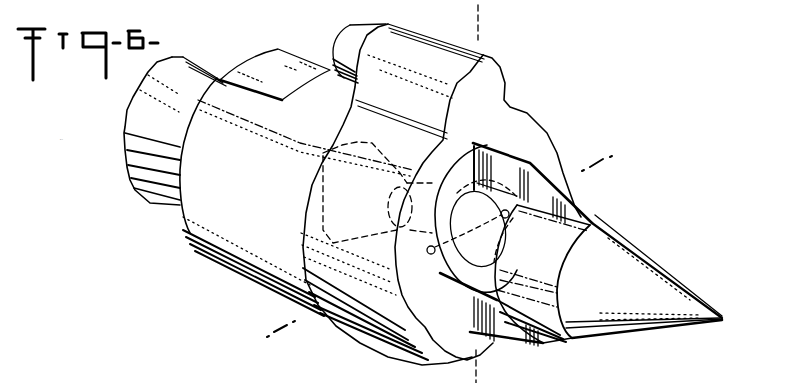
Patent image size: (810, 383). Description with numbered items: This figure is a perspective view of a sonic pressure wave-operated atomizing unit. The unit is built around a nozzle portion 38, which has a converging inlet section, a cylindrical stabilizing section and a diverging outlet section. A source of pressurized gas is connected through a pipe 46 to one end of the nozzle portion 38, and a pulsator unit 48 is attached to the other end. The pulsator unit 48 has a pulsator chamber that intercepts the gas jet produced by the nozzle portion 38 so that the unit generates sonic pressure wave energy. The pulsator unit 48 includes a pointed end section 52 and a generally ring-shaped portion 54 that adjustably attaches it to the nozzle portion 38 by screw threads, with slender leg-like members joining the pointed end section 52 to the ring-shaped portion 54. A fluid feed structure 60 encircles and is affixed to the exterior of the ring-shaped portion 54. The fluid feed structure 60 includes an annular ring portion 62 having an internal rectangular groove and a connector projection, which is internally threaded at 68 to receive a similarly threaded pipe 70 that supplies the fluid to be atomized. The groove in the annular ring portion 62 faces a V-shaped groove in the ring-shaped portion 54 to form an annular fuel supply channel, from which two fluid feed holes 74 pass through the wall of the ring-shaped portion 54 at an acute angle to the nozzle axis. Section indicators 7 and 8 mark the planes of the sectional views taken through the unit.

The section line 7- 7 is at (458, 36).
The section line 8- 8 is at (597, 133).
The nozzle portion 38 is at (258, 280).
The pipe 46 is at (199, 57).
The pulsator unit 48 is at (588, 203).
The pointed end section 52 is at (655, 247).
The ring-shaped portion 54 is at (435, 298).
The fluid feed structure 60 is at (513, 68).
The annular ring portion 62 is at (547, 134).
The internal threads 68 is at (350, 382).
The pipe 70 is at (360, 34).
The fluid feed holes 74 is at (499, 212).